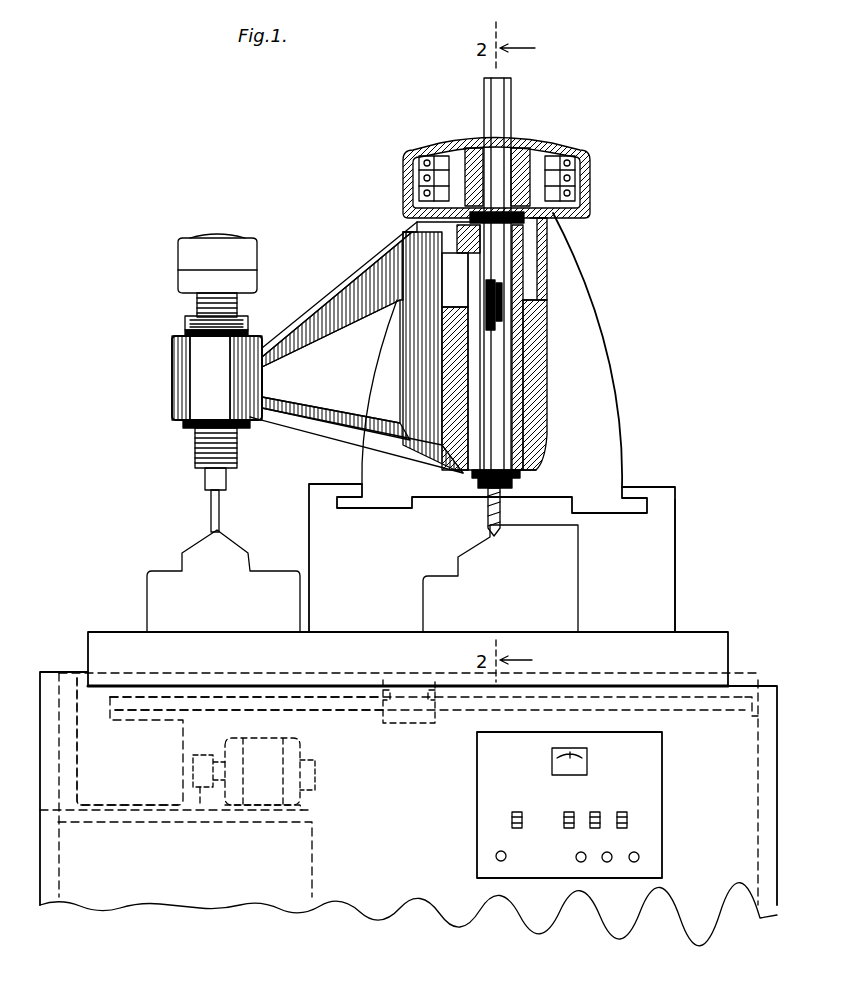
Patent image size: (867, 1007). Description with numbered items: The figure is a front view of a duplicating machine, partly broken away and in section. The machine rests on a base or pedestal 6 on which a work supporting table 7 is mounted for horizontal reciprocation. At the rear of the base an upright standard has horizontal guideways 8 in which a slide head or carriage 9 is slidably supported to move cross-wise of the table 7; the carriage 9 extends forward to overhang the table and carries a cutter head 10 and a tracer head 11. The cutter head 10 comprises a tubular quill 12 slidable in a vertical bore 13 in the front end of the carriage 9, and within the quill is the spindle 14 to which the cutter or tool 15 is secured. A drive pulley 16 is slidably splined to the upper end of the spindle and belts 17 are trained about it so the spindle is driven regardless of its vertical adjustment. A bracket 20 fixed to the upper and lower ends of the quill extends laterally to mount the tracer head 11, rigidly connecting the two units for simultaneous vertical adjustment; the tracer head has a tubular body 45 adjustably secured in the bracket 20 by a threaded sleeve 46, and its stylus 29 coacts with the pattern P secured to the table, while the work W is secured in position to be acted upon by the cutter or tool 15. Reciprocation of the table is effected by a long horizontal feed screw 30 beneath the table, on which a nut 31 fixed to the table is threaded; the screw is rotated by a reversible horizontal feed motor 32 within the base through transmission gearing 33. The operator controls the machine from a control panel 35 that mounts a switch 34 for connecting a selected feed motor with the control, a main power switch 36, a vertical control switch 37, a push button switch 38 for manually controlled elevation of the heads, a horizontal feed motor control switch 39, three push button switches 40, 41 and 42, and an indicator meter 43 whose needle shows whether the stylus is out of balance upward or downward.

The base or pedestal 6 is at (776, 682).
The work supporting table 7 is at (713, 632).
The horizontal guideways 8 is at (686, 557).
The slide head or carriage 9 is at (624, 365).
The cutter head 10 is at (549, 386).
The tracer head 11 is at (162, 380).
The tubular quill 12 is at (524, 258).
The vertical bore 13 is at (531, 434).
The spindle 14 is at (505, 284).
The cutter or tool 15 is at (487, 519).
The drive pulley 16 is at (547, 165).
The belts 17 is at (583, 190).
The bracket 20 is at (366, 253).
The stylus 29 is at (201, 514).
The horizontal feed screw 30 is at (355, 714).
The nut 31 is at (420, 730).
The horizontal feed motor 32 is at (283, 730).
The transmission gearing 33 is at (100, 792).
The switch 34 is at (592, 832).
The control panel 35 is at (672, 837).
The main power switch 36 is at (582, 792).
The vertical control switch 37 is at (530, 790).
The push button switch 38 is at (503, 851).
The horizontal feed motor control switch 39 is at (645, 790).
The push button switch 40 is at (581, 862).
The push button switch 41 is at (607, 862).
The push button switch 42 is at (634, 862).
The indicator meter 43 is at (597, 769).
The tubular body 45 is at (193, 452).
The sleeve 46 is at (188, 324).
The pattern P is at (271, 569).
The work W is at (583, 587).